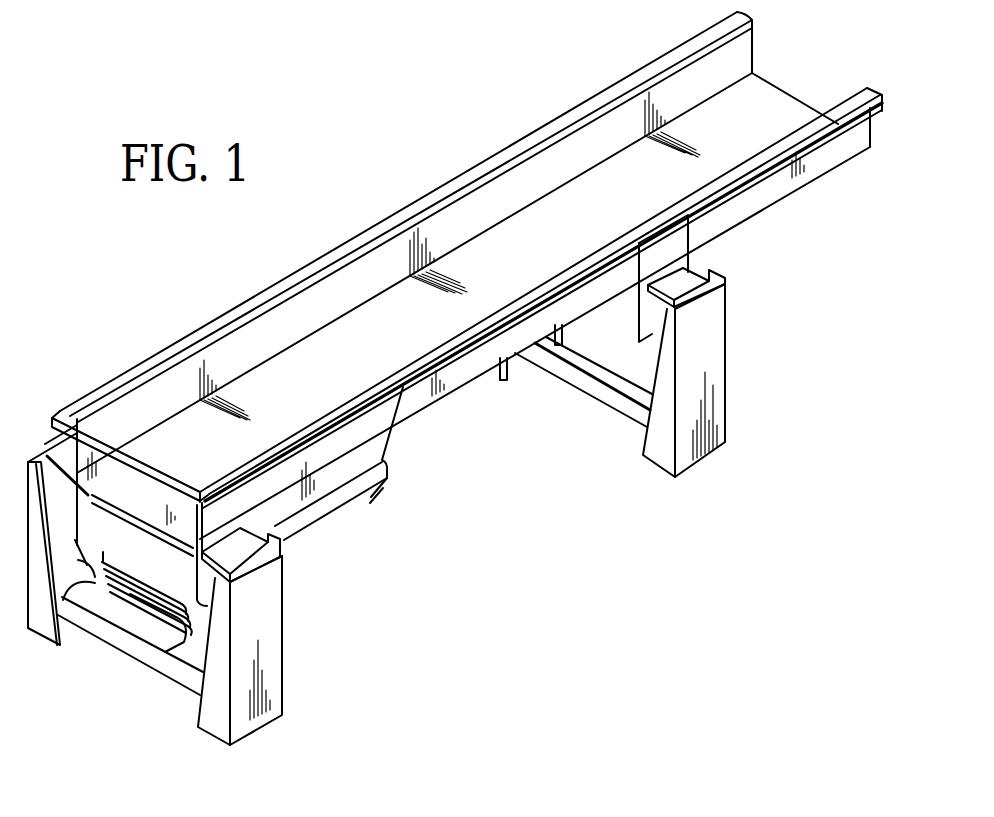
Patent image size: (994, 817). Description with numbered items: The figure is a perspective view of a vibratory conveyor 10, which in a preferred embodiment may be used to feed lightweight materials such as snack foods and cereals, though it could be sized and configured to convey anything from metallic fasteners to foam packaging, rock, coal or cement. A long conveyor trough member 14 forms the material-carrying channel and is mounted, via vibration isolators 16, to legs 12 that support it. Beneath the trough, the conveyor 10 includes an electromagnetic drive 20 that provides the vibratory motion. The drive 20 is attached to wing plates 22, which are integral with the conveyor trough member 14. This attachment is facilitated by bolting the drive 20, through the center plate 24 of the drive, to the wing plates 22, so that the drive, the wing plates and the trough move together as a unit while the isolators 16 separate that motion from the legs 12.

The conveyor 10 is at (436, 138).
The legs 12 is at (722, 422).
The conveyor trough member 14 is at (770, 90).
The vibration isolators 16 is at (688, 280).
The electromagnetic drive 20 is at (185, 598).
The wing plates 22 is at (313, 512).
The center plate 24 is at (87, 565).